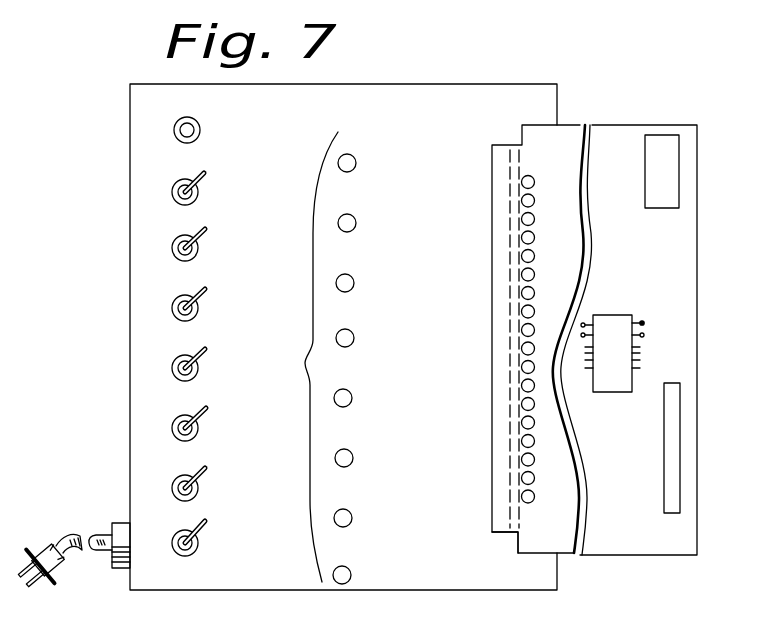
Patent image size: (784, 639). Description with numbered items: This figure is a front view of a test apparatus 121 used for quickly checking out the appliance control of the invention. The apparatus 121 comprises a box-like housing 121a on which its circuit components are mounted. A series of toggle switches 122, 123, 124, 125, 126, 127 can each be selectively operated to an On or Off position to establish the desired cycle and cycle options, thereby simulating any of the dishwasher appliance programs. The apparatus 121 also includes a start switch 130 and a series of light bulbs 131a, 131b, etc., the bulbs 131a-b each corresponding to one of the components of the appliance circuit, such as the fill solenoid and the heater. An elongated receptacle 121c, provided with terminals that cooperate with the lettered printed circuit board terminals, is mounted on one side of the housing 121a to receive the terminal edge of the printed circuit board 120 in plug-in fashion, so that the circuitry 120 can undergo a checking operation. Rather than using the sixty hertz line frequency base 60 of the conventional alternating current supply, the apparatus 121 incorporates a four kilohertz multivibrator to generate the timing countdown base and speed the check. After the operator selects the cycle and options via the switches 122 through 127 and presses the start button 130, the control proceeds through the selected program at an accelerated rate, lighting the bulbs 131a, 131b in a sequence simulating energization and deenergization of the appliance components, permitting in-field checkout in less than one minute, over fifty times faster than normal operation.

The test apparatus 121 is at (431, 135).
The box-like housing 121a is at (532, 105).
The elongated receptacle 121c is at (488, 518).
The printed circuit board 120 is at (572, 133).
The start switch 130 is at (173, 131).
The toggle switch 122 is at (173, 192).
The toggle switch 123 is at (176, 242).
The toggle switch 124 is at (181, 298).
The toggle switch 125 is at (180, 360).
The toggle switch 126 is at (181, 415).
The toggle switch 127 is at (180, 482).
The light bulb 131a is at (351, 156).
The light bulb 131b is at (353, 218).
The light bulbs 131a-b is at (305, 363).
The integrated circuit component 60 is at (610, 376).